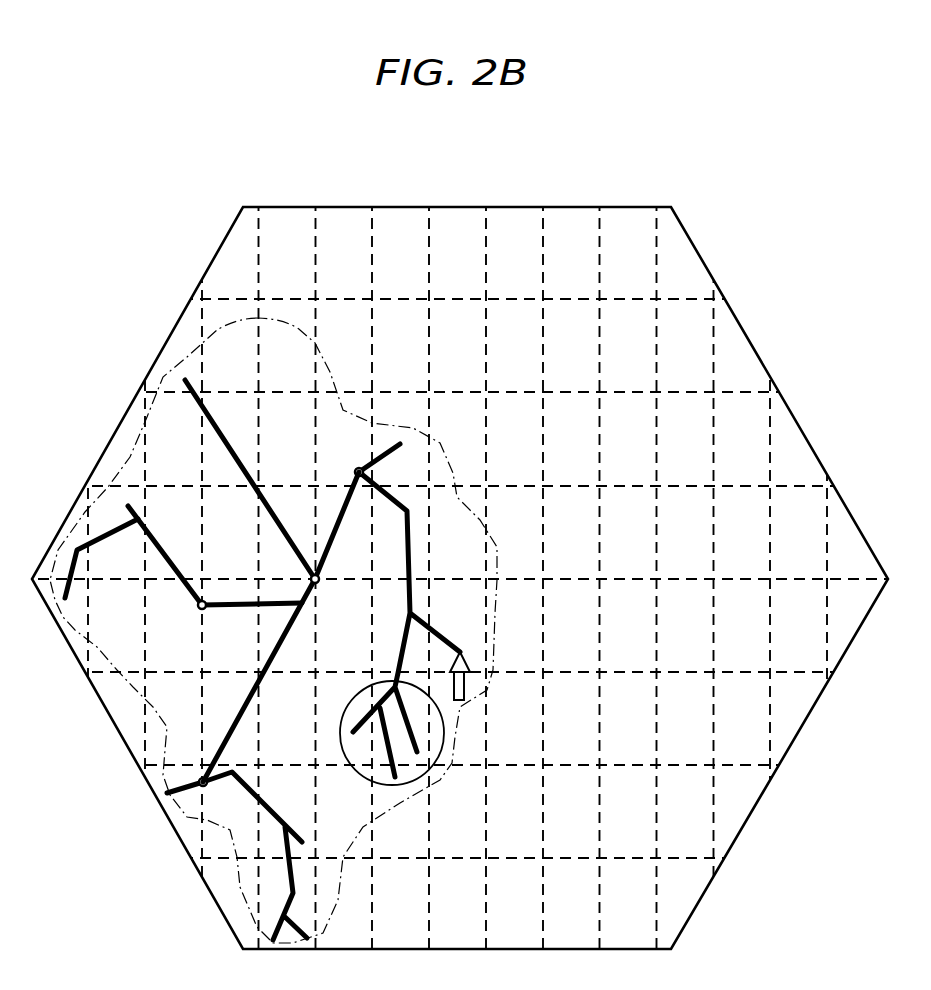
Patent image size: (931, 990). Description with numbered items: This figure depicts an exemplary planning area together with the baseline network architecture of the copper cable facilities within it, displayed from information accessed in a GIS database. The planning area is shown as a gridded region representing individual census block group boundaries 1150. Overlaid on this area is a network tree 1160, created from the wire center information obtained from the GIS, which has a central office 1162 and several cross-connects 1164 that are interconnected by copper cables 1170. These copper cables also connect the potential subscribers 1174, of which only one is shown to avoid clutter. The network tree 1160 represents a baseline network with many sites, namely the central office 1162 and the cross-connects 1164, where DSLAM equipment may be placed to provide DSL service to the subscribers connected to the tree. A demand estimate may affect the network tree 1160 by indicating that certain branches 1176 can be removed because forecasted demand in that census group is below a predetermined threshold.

The census block group boundaries 1150 is at (571, 227).
The network tree 1160 is at (330, 370).
The central office 1162 is at (317, 582).
The cross-connects 1164 is at (359, 472).
The copper cables 1170 is at (110, 538).
The potential subscribers 1174 is at (465, 680).
The branches 1176 is at (357, 693).